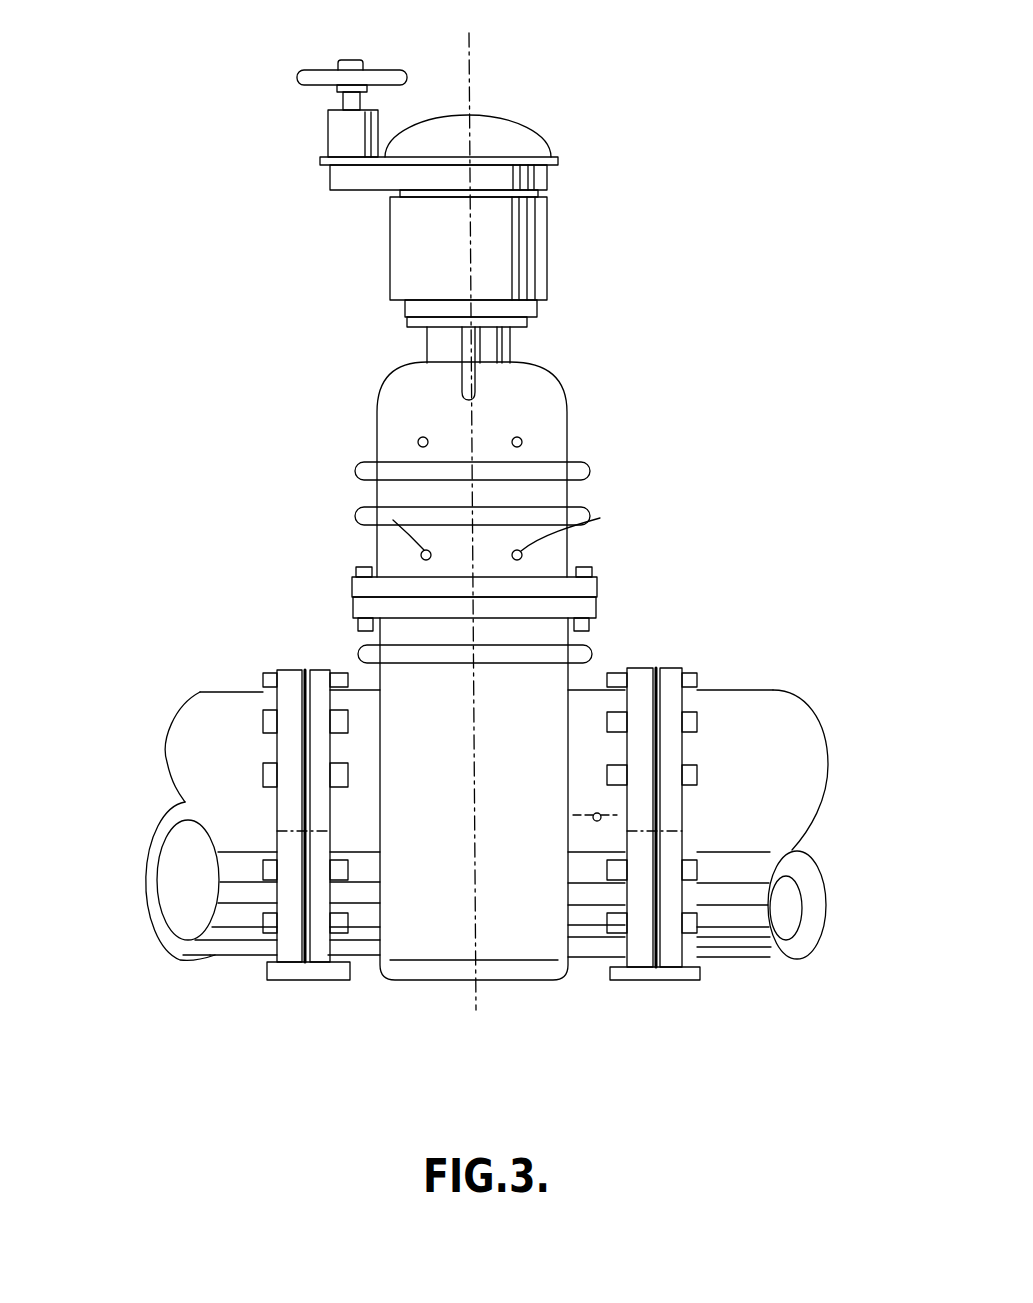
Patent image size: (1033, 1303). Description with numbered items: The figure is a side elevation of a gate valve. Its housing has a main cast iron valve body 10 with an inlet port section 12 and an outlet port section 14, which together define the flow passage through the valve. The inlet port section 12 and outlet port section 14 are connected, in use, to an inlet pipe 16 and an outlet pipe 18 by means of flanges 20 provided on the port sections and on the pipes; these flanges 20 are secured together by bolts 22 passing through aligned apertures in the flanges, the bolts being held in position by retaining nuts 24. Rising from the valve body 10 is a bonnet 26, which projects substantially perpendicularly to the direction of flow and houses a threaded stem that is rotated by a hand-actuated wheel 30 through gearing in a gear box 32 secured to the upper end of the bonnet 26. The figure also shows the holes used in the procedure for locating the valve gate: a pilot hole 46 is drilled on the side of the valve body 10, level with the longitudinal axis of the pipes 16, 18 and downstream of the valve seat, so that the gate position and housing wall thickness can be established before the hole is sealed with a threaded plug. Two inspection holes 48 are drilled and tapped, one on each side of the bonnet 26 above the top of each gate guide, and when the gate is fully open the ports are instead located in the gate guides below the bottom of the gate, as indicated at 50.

The valve body 10 is at (458, 995).
The inlet port section 12 is at (367, 920).
The outlet port section 14 is at (587, 917).
The inlet pipe 16 is at (203, 962).
The outlet pipe 18 is at (773, 962).
The flanges 20 is at (305, 975).
The bolts 22 is at (268, 686).
The retaining nuts 24 is at (336, 670).
The bonnet 26 is at (612, 472).
The hand-actuated wheel 30 is at (315, 70).
The gear box 32 is at (560, 276).
The pilot hole 46 is at (603, 817).
The inspection holes 48 is at (355, 514).
The ports in gate guides 50 is at (421, 437).